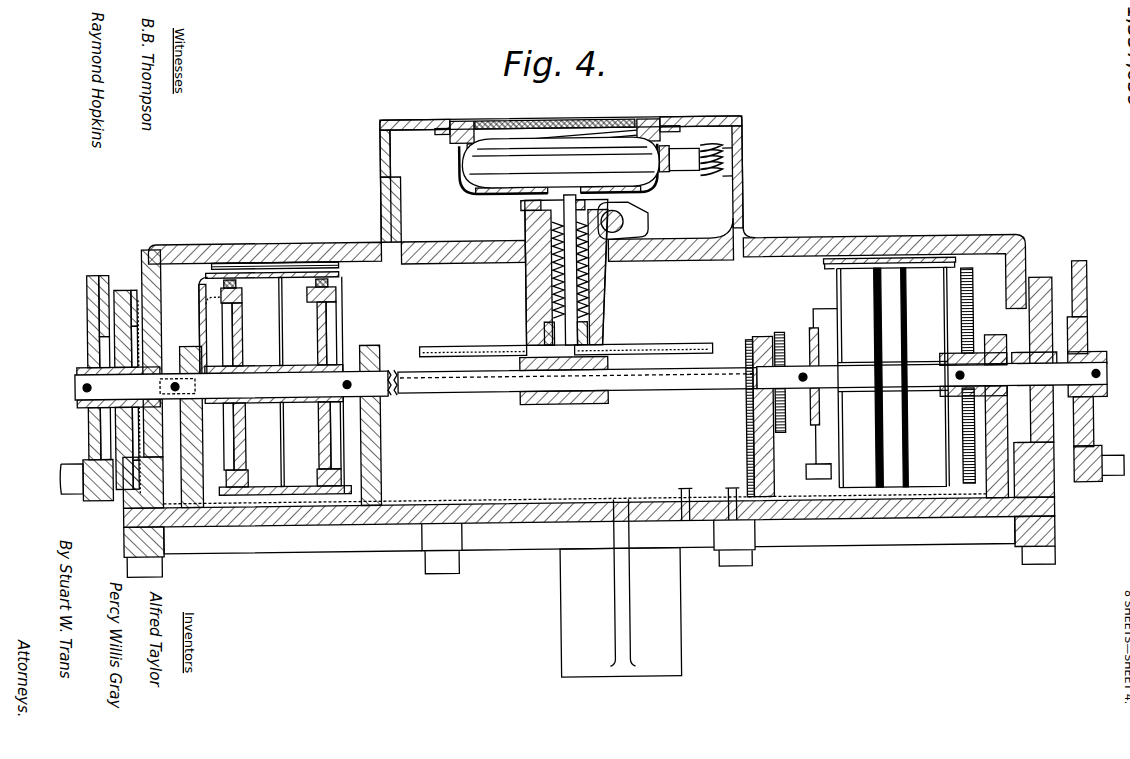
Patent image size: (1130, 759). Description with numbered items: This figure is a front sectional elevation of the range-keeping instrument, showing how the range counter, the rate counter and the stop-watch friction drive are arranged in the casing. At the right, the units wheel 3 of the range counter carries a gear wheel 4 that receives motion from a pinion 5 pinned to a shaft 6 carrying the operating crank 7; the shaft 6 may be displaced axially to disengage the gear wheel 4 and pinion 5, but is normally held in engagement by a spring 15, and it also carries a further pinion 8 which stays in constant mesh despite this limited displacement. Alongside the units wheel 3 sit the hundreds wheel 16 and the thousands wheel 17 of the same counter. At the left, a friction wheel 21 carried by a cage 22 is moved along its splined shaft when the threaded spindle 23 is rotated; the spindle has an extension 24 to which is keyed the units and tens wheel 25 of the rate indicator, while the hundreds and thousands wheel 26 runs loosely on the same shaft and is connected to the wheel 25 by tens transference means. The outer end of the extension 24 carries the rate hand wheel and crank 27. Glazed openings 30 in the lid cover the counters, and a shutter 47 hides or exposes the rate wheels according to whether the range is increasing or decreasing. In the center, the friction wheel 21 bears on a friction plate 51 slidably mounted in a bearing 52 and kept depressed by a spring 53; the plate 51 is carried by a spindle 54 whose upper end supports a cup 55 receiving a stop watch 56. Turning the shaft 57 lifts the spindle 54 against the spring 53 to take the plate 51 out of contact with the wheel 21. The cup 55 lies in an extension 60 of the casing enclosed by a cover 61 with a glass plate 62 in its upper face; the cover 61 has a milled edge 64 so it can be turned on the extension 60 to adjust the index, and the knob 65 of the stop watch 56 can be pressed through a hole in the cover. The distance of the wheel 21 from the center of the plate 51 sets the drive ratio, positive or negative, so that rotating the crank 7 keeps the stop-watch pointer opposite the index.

The units wheel 3 is at (893, 377).
The gear wheel 4 is at (985, 352).
The pinion 5 is at (976, 304).
The shaft 6 is at (932, 391).
The operating crank 7 is at (1110, 462).
The pinion 8 is at (810, 336).
The spring 15 is at (748, 438).
The hundreds wheel 16 is at (891, 377).
The thousands wheel 17 is at (891, 372).
The friction wheel 21 is at (578, 404).
The cage 22 is at (530, 404).
The threaded spindle 23 is at (475, 388).
The extension 24 is at (236, 385).
The units and tens wheel 25 is at (339, 314).
The hundreds and thousands wheel 26 is at (245, 382).
The rate hand wheel and crank 27 is at (72, 472).
The glazed openings 30 is at (308, 252).
The shutter 47 is at (337, 281).
The friction plate 51 is at (440, 345).
The bearing 52 is at (540, 334).
The spring 53 is at (527, 272).
The spindle 54 is at (600, 208).
The cup 55 is at (498, 197).
The stop watch 56 is at (470, 162).
The shaft 57 is at (640, 222).
The extension 60 is at (733, 222).
The cover 61 is at (745, 157).
The glass plate 62 is at (552, 112).
The milled edge 64 is at (745, 121).
The knob 65 is at (712, 145).